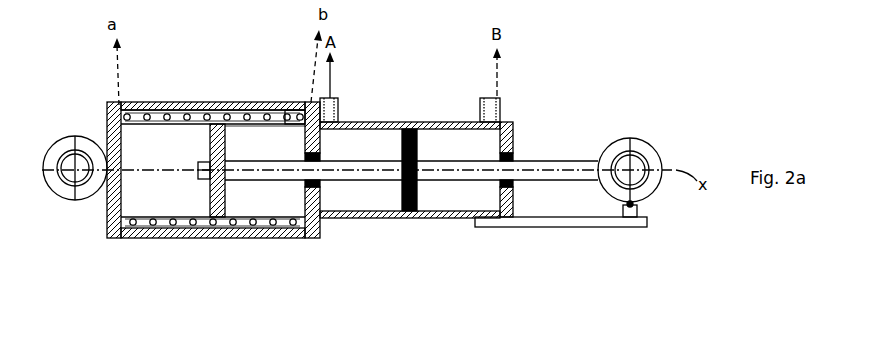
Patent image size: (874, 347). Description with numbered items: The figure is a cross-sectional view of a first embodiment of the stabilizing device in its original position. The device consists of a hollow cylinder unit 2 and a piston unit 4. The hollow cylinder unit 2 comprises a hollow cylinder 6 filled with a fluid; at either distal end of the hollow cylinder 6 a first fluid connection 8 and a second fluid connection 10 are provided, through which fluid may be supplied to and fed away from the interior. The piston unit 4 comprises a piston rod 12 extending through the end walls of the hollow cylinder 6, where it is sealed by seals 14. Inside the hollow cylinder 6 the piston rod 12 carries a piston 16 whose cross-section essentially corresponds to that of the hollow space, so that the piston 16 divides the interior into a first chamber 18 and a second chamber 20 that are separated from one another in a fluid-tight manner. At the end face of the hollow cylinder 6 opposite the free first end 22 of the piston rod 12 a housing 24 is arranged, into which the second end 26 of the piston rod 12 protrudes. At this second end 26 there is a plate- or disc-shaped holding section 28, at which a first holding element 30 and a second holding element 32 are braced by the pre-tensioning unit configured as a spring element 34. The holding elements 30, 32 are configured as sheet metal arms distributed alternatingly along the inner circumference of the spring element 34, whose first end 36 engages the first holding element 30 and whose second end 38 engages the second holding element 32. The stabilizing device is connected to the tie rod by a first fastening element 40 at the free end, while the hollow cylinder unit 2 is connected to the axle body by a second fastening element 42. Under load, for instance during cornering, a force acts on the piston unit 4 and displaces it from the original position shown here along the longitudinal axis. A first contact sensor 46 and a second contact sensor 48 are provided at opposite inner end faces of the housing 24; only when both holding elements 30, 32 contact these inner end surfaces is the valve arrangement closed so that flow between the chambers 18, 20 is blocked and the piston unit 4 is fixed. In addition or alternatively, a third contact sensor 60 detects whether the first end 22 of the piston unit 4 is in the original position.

The hollow cylinder unit 2 is at (357, 276).
The piston unit 4 is at (586, 128).
The hollow cylinder 6 is at (440, 217).
The first fluid connection 8 is at (342, 96).
The second fluid connection 10 is at (478, 97).
The piston rod 12 is at (530, 177).
The seals 14 is at (513, 157).
The piston 16 is at (399, 218).
The first chamber 18 is at (372, 155).
The second chamber 20 is at (470, 155).
The first end 22 is at (597, 158).
The housing 24 is at (212, 240).
The second end 26 is at (228, 173).
The holding section 28 is at (205, 183).
The first holding element 30 is at (253, 125).
The second holding element 32 is at (153, 125).
The spring element 34 is at (170, 240).
The first end 36 is at (295, 108).
The second end 38 is at (132, 108).
The first fastening element 40 is at (660, 165).
The second fastening element 42 is at (58, 147).
The first contact sensor 46 is at (120, 104).
The second contact sensor 48 is at (303, 100).
The third contact sensor 60 is at (640, 211).